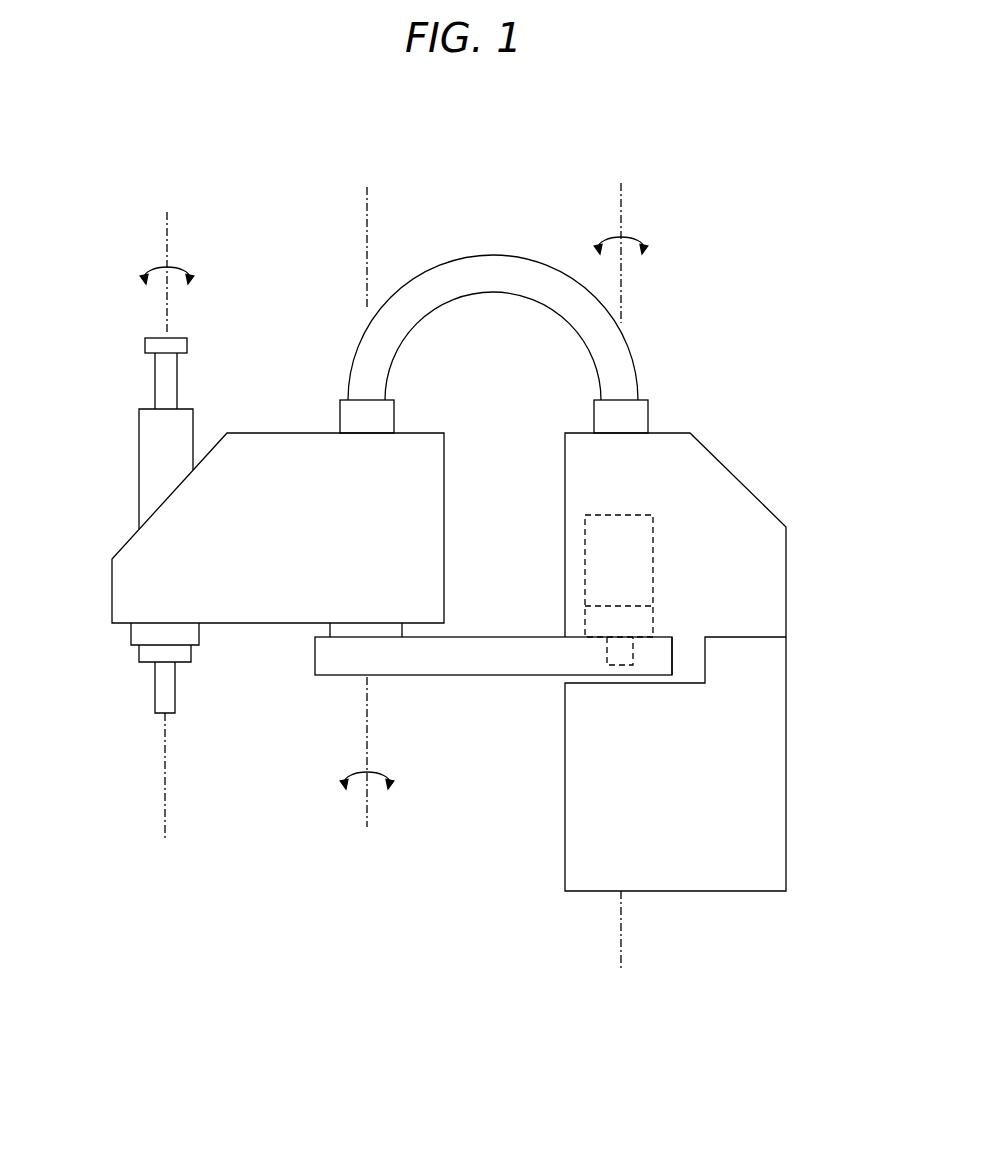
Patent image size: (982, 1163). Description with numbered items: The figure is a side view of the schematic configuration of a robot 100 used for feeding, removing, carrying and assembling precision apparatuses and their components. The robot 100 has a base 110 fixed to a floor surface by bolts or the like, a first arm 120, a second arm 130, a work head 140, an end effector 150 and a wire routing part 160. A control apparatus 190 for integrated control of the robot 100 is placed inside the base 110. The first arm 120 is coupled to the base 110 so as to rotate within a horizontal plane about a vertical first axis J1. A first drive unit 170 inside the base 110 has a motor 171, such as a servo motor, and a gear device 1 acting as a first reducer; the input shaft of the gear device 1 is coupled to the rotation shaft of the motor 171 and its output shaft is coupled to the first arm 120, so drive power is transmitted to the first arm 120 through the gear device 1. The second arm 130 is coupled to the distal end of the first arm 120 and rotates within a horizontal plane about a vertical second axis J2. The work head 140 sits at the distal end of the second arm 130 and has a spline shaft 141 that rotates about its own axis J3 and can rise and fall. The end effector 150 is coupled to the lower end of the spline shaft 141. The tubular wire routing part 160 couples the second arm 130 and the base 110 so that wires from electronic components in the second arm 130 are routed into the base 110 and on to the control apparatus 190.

The robot 100 is at (692, 218).
The base 110 is at (798, 757).
The first arm 120 is at (436, 688).
The second arm 130 is at (456, 458).
The work head 140 is at (126, 448).
The spline shaft 141 is at (165, 372).
The end effector 150 is at (153, 690).
The wire routing part 160 is at (468, 270).
The first drive unit 170 is at (575, 513).
The motor 171 is at (585, 560).
The gear device 1 is at (583, 623).
The control apparatus 190 is at (683, 817).
The first axis J1 is at (620, 196).
The second axis J2 is at (367, 805).
The axis J3 is at (168, 232).